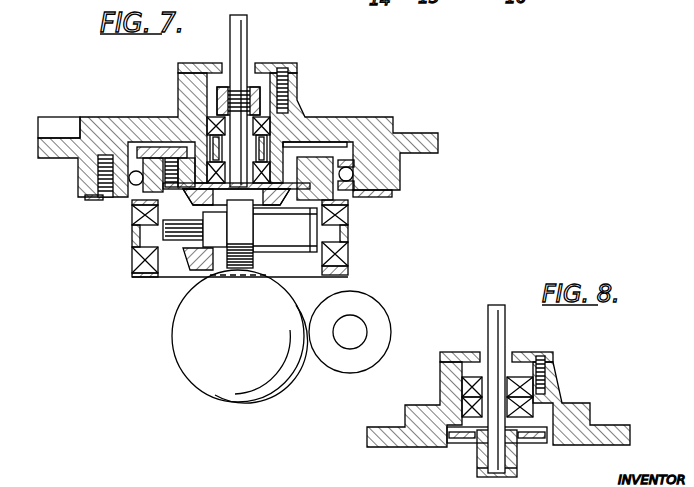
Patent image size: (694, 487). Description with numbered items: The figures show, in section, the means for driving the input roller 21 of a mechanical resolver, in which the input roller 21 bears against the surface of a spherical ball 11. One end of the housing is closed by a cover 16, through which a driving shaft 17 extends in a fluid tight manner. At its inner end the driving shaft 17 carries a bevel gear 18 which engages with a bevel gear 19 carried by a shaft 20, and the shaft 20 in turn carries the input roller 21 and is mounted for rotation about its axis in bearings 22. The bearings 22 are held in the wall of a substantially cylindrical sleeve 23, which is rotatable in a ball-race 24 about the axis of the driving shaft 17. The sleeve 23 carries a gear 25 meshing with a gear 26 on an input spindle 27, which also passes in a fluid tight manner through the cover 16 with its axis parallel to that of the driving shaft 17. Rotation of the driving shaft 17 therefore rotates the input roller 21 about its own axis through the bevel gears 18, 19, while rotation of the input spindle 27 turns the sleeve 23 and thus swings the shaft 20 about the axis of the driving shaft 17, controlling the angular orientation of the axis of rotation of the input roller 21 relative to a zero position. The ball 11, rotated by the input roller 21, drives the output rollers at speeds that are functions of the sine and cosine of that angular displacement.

In FIG. 7, the spherical ball 11 is at (187, 362).
In FIG. 7, the cover 16 is at (413, 137).
In FIG. 8, the cover 16 is at (607, 423).
In FIG. 7, the driving shaft 17 is at (247, 34).
In FIG. 7, the bevel gear 18 is at (135, 203).
In FIG. 7, the bevel gear 19 is at (190, 278).
In FIG. 7, the shaft 20 is at (216, 262).
In FIG. 7, the input roller 21 is at (243, 262).
In FIG. 7, the bearings 22 is at (132, 248).
In FIG. 7, the cylindrical sleeve 23 is at (320, 143).
In FIG. 7, the ball-race 24 is at (342, 171).
In FIG. 7, the gear 25 is at (310, 147).
In FIG. 8, the gear 26 is at (533, 440).
In FIG. 8, the input spindle 27 is at (489, 310).